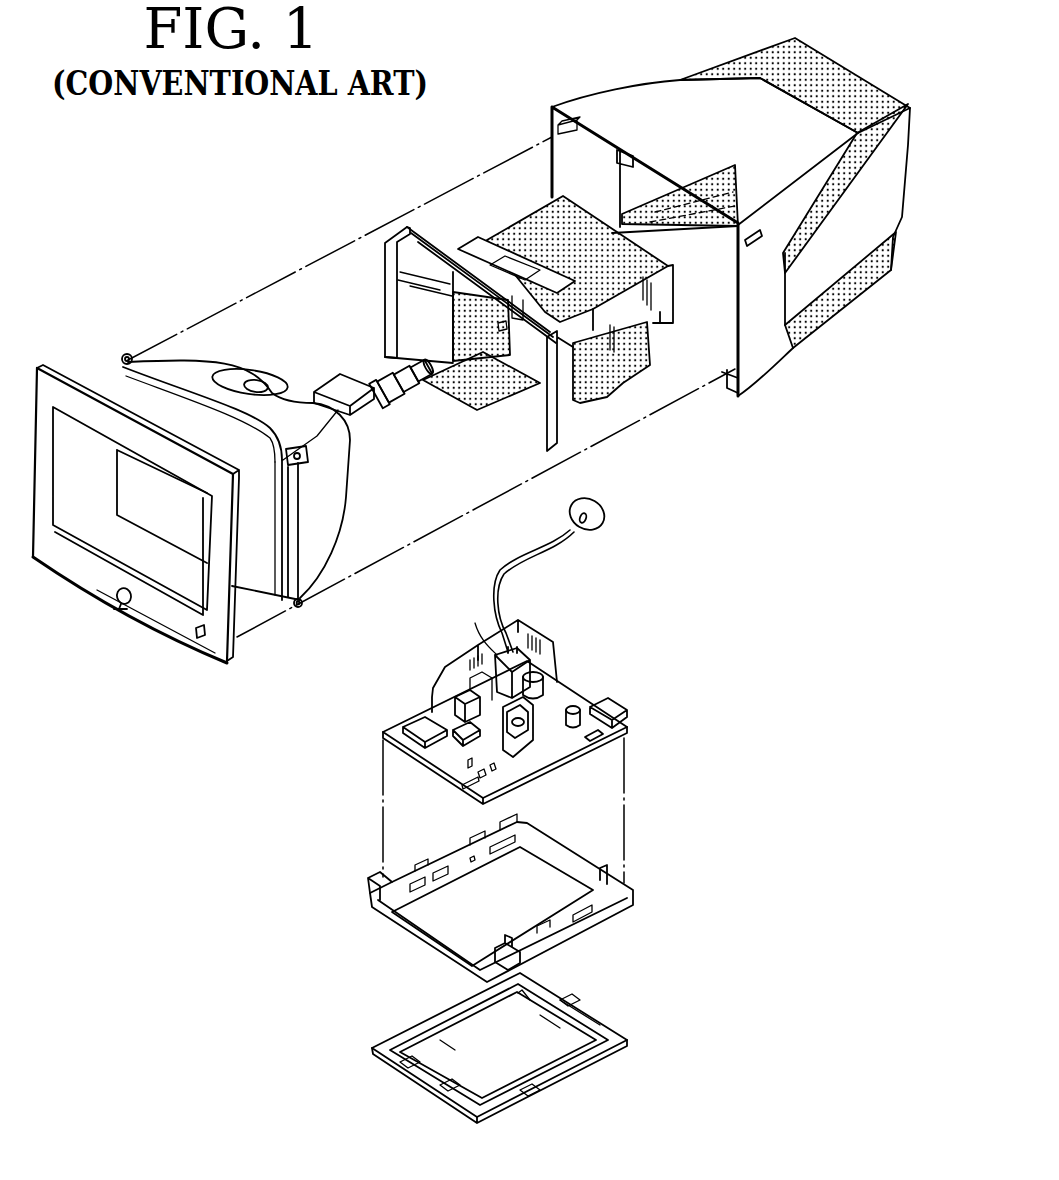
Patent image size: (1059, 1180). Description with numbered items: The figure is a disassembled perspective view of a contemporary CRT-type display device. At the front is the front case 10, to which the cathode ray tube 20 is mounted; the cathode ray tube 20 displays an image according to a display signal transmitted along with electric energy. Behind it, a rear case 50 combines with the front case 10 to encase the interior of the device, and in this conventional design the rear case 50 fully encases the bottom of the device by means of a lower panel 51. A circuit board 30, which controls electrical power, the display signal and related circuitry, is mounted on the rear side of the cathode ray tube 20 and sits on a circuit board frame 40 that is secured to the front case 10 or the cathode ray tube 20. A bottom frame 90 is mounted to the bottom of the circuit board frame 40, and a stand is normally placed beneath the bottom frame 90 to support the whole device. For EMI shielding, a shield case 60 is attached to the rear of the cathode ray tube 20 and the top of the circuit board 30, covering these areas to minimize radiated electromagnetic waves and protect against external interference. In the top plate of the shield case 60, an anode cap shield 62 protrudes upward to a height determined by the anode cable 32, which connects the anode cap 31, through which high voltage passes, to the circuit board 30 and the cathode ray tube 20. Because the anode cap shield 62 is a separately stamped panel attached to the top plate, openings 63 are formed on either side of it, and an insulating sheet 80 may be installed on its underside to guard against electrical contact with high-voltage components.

The front case 10 is at (88, 388).
The cathode ray tube 20 is at (195, 366).
The circuit board 30 is at (420, 715).
The anode cap 31 is at (600, 527).
The anode cable 32 is at (533, 551).
The circuit board frame 40 is at (373, 877).
The rear case 50 is at (642, 97).
The lower panel 51 is at (720, 277).
The shield case 60 is at (432, 227).
The anode cap shield 62 is at (520, 253).
The openings 63 is at (555, 292).
The insulating sheet 80 is at (492, 393).
The bottom frame 90 is at (395, 1033).